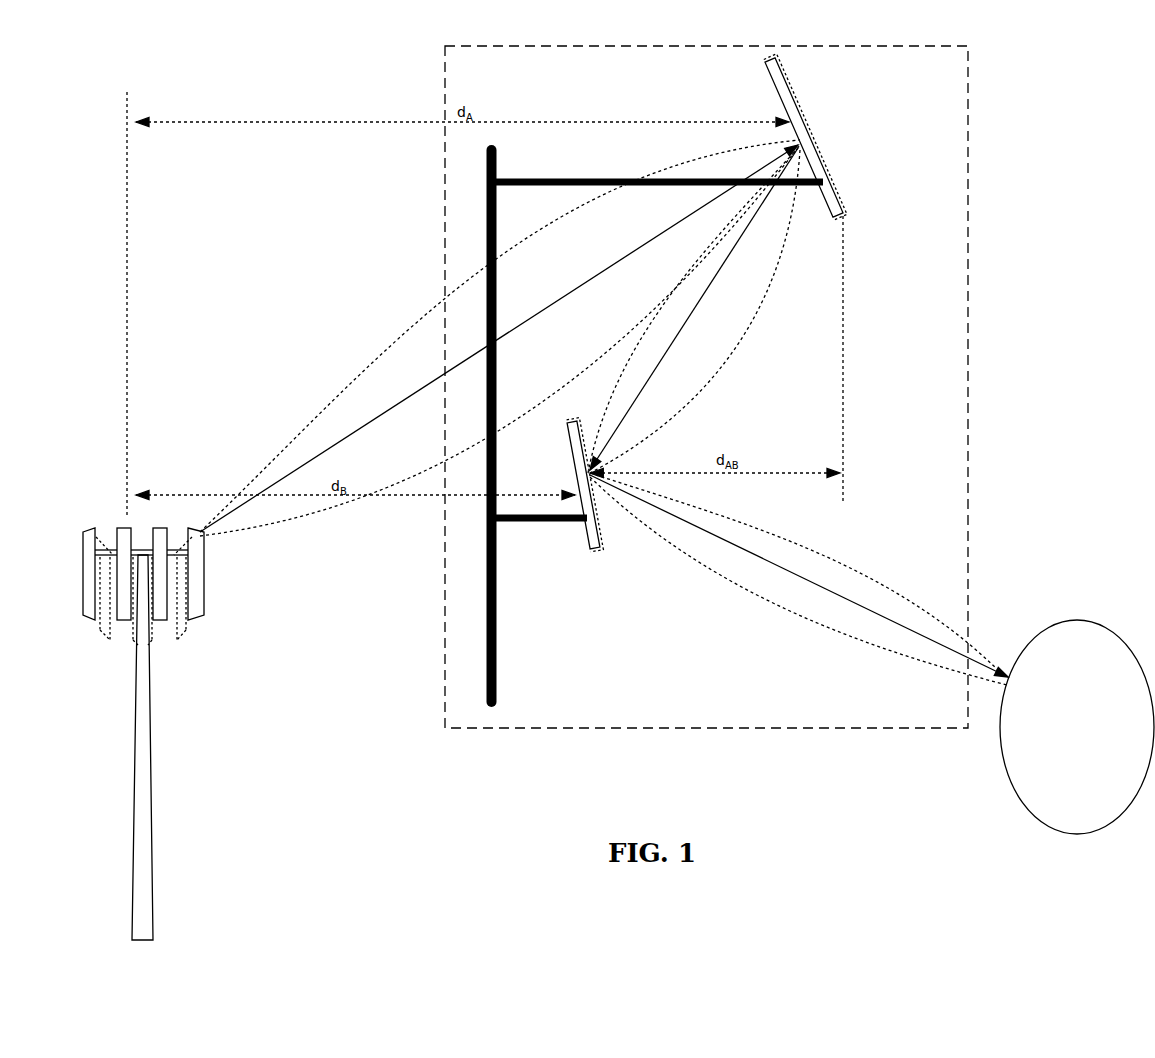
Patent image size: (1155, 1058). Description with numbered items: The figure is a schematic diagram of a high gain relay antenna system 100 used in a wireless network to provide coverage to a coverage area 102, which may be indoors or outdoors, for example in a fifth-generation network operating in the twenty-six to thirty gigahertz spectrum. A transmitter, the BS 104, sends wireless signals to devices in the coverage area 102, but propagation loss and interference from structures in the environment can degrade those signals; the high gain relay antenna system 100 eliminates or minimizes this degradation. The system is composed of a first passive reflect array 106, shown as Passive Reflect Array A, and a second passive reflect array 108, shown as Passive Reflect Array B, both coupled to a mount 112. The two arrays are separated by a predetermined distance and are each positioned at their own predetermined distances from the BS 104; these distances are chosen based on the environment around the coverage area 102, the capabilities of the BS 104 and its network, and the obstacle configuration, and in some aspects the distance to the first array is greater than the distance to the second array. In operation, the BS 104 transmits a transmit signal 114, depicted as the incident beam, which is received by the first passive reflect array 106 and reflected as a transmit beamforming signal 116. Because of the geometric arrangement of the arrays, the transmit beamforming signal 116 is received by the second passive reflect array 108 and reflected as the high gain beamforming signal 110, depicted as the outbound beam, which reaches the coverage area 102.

The high gain relay antenna system 100 is at (933, 46).
The coverage area 102 is at (1093, 621).
The BS 104 is at (204, 593).
The first passive reflect array 106 is at (833, 190).
The second passive reflect array 108 is at (586, 532).
The high gain beamforming signal 110 is at (945, 650).
The mount 112 is at (497, 642).
The transmit signal 114 is at (293, 475).
The transmit beamforming signal 116 is at (640, 390).